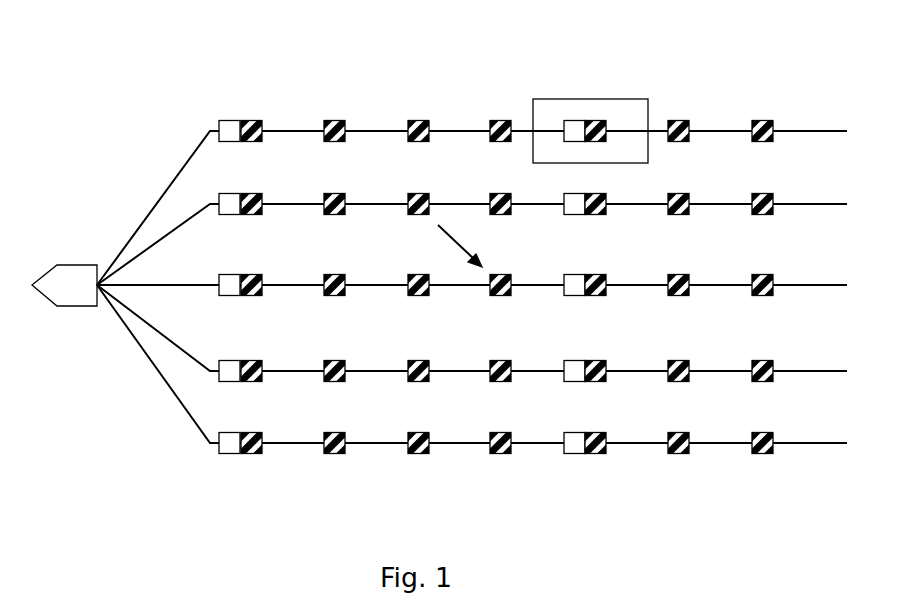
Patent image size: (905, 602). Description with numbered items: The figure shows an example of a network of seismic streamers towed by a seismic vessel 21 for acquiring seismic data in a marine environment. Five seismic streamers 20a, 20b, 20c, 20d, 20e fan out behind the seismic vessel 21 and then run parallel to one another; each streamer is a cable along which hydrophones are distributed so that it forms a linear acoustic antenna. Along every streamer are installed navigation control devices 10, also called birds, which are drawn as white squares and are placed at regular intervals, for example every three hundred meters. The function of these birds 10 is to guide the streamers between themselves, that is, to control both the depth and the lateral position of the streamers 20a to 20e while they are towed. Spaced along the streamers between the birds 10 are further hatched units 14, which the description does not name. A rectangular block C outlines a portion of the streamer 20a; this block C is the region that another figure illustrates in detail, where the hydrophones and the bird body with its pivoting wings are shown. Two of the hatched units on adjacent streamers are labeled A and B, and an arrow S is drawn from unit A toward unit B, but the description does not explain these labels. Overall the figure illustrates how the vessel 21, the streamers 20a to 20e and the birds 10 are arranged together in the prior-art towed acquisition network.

The navigation control device 10 is at (233, 120).
The sensor unit (hatched) 14 is at (507, 239).
The seismic streamer 20a is at (201, 141).
The seismic streamer 20b is at (180, 225).
The seismic streamer 20c is at (157, 285).
The seismic streamer 20d is at (147, 328).
The seismic streamer 20e is at (168, 402).
The seismic vessel 21 is at (78, 322).
The sensor position A is at (418, 193).
The sensor position B is at (500, 275).
The block C is at (642, 99).
The direction arrow S is at (460, 246).